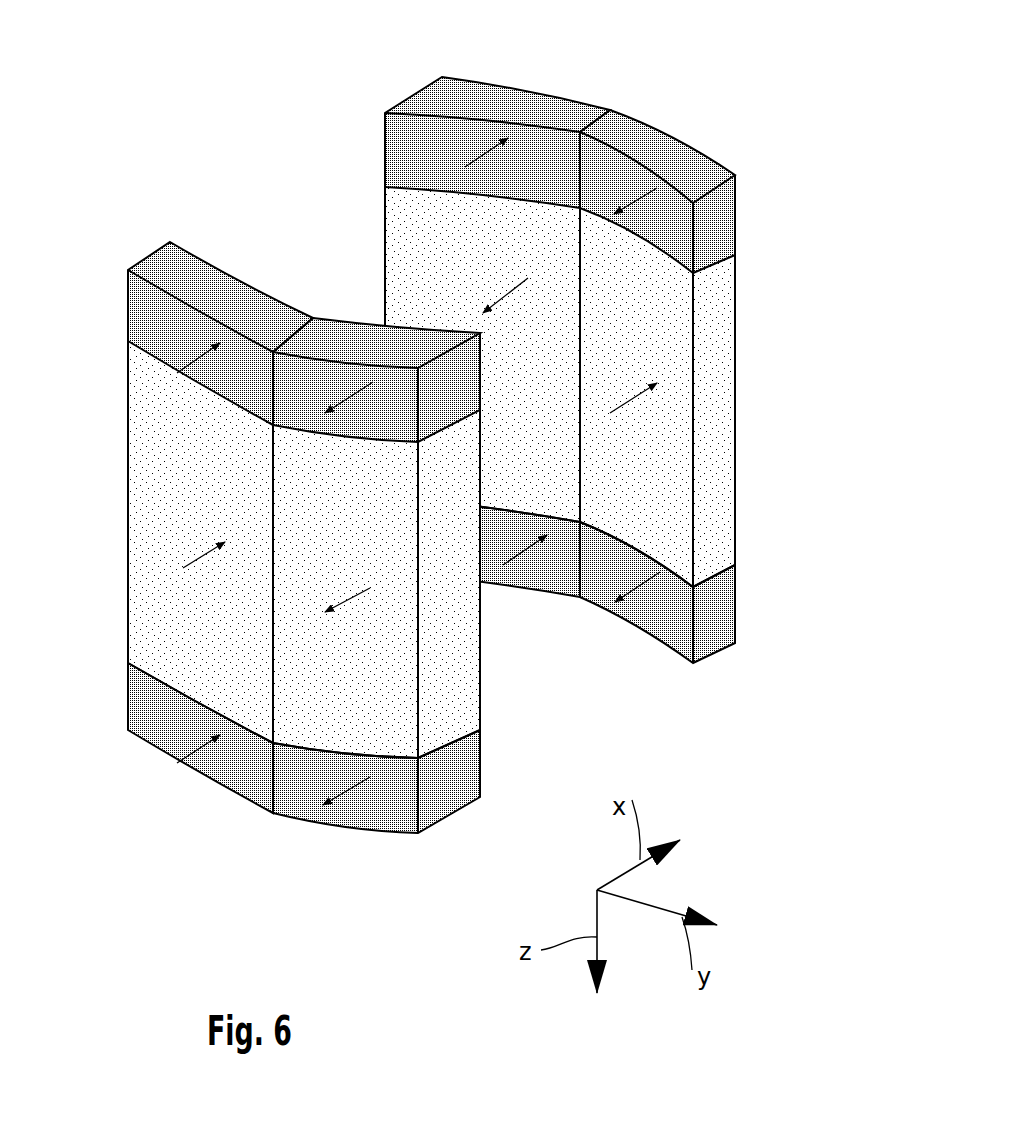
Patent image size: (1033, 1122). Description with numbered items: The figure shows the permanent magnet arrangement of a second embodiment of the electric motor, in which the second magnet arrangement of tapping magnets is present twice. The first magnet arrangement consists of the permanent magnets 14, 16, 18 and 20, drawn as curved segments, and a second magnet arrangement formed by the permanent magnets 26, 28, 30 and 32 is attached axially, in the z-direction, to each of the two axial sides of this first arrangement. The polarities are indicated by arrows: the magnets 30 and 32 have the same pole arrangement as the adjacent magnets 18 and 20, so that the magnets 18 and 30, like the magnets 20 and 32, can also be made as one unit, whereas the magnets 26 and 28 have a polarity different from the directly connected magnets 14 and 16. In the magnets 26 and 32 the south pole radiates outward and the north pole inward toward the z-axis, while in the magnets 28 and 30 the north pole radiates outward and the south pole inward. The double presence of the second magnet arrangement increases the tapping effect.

The permanent magnet 14 is at (677, 453).
The permanent magnet 16 is at (413, 228).
The permanent magnet 18 is at (403, 667).
The permanent magnet 20 is at (158, 470).
The permanent magnet 26 is at (670, 143).
The permanent magnet 28 is at (512, 97).
The permanent magnet 30 is at (356, 345).
The permanent magnet 32 is at (205, 288).